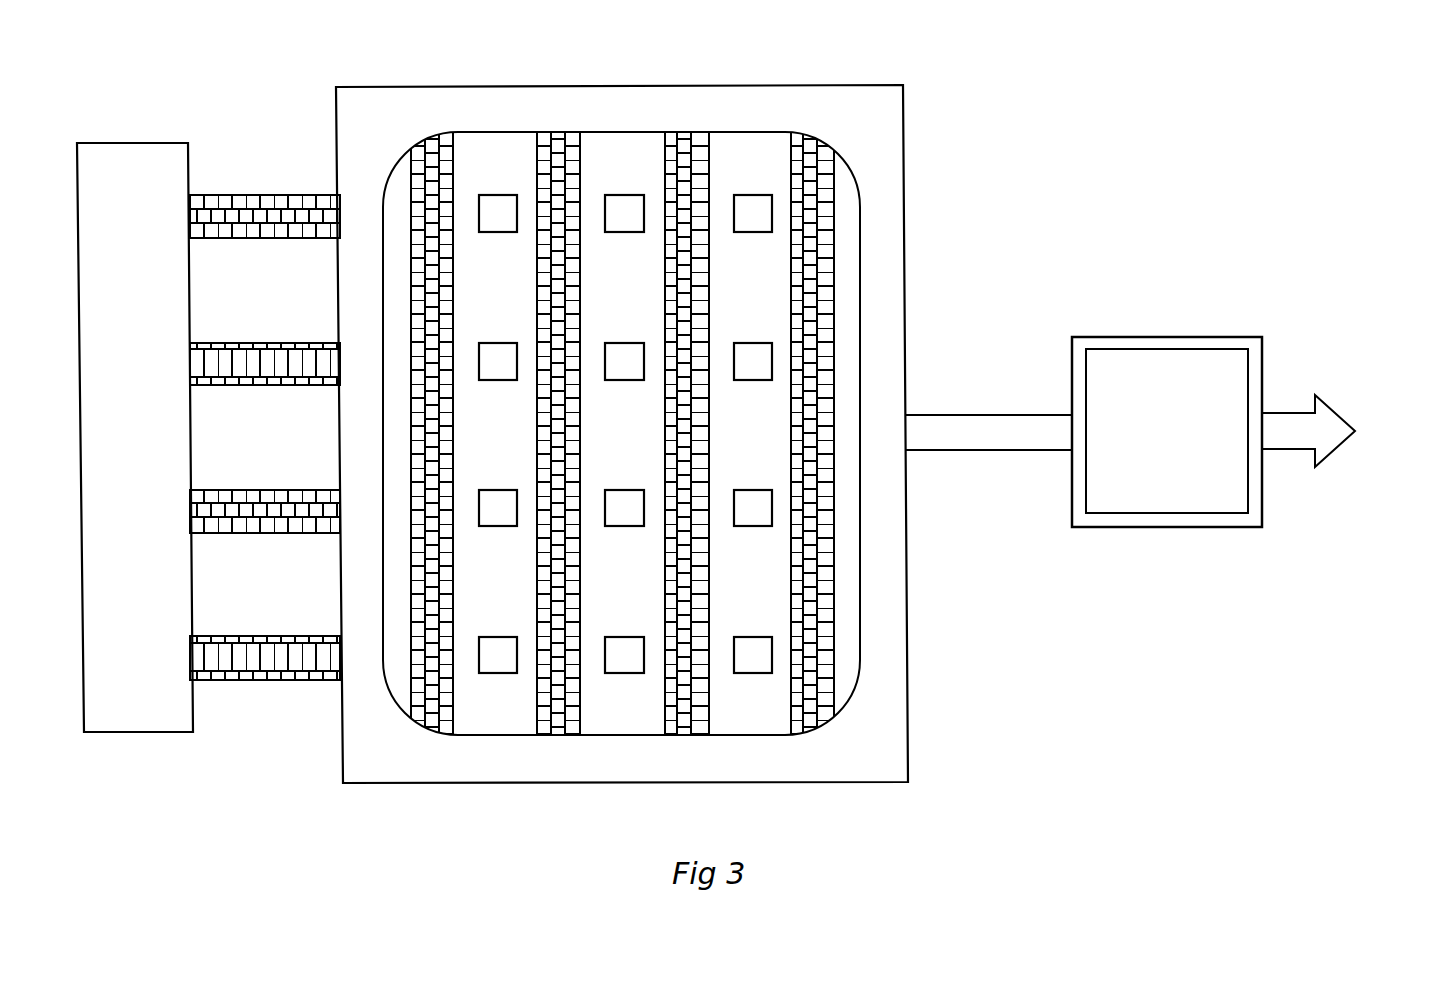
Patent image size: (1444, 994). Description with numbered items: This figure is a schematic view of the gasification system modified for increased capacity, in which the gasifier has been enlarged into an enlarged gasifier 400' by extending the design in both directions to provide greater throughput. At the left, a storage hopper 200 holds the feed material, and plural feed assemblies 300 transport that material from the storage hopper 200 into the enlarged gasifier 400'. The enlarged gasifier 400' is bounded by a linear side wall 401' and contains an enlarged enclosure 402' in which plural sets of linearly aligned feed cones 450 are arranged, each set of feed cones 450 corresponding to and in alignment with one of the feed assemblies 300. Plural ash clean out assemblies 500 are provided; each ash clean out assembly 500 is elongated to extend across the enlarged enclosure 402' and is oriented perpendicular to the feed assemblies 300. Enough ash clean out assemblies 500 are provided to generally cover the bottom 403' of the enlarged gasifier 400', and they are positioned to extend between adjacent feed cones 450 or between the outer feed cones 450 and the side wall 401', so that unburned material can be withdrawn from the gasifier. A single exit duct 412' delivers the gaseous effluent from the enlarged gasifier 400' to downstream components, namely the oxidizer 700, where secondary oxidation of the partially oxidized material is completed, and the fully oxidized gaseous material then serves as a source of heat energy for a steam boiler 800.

The storage hopper assembly 200 is at (122, 124).
The feed assembly 300 is at (244, 170).
The enlarged gasifier 400' is at (680, 439).
The side wall 401' is at (680, 461).
The enlarged enclosure 402' is at (623, 383).
The bottom of gasifier 403' is at (625, 444).
The feed cones 450 is at (495, 205).
The ash clean out assembly 500 is at (445, 715).
The exit duct 412' is at (988, 396).
The oxidizer 700 is at (1160, 315).
The steam boiler 800 is at (1344, 431).